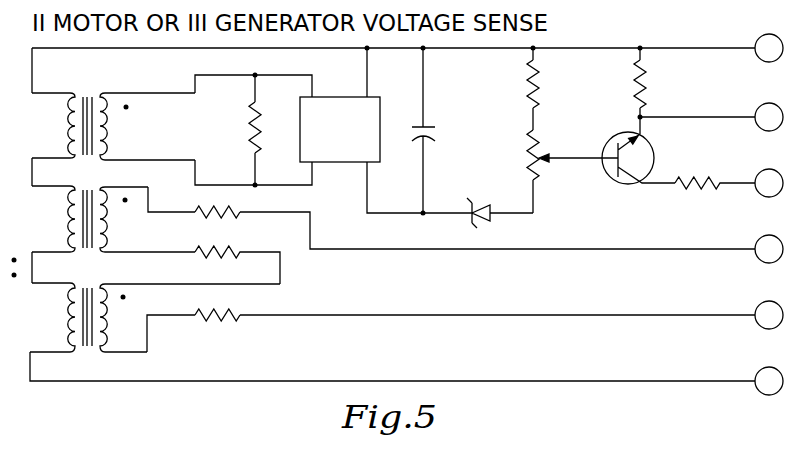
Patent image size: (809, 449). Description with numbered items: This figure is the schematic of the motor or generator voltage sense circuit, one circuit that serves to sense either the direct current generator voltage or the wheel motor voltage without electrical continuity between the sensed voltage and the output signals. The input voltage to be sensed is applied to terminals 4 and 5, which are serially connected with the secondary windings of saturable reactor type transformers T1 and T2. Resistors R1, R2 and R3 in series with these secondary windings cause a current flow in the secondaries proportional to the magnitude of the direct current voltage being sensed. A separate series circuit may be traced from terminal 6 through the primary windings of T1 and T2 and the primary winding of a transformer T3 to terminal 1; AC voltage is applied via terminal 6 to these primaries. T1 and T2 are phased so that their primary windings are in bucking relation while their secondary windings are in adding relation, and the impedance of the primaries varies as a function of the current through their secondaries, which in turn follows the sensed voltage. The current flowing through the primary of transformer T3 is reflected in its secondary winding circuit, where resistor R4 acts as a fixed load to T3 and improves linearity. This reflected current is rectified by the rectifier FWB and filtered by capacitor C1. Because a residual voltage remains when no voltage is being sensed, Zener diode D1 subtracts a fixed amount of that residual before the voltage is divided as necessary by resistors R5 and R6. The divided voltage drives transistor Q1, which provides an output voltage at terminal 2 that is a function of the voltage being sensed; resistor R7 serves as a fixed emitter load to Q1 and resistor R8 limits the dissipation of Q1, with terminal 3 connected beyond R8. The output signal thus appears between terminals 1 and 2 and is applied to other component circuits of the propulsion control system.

The saturable reactor type transformer T1 is at (155, 308).
The saturable reactor type transformer T2 is at (113, 209).
The transformer T3 is at (113, 118).
The resistor R1 is at (193, 330).
The resistor R2 is at (237, 265).
The resistor R3 is at (217, 223).
The resistor R4 is at (237, 130).
The resistor R5 is at (515, 89).
The resistor R6 is at (555, 171).
The resistor R7 is at (676, 82).
The resistor R8 is at (715, 170).
The rectifier FWB is at (340, 129).
The capacitor C1 is at (439, 130).
The Zener diode D1 is at (500, 206).
The transistor Q1 is at (628, 160).
The terminal 1 is at (769, 48).
The terminal 2 is at (769, 117).
The terminal 3 is at (769, 183).
The terminal 4 is at (769, 249).
The terminal 5 is at (511, 315).
The terminal 6 is at (406, 373).